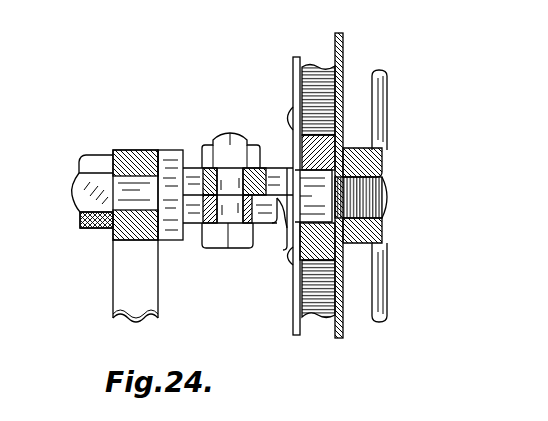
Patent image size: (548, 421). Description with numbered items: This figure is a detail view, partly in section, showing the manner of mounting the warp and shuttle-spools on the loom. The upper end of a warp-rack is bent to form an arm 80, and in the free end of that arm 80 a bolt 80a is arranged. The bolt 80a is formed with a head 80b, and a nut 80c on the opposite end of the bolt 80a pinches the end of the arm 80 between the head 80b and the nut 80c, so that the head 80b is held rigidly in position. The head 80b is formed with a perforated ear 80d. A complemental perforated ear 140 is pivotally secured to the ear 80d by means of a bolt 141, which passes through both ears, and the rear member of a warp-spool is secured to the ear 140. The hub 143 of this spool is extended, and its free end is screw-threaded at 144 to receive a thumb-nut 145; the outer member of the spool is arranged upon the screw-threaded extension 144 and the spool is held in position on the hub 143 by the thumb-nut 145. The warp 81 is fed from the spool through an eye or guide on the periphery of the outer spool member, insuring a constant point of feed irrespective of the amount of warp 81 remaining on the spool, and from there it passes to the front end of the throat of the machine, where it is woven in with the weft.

The arm 80 is at (118, 272).
The bolt 80a is at (130, 187).
The head 80b is at (173, 170).
The nut 80c is at (93, 168).
The perforated ear 80d is at (198, 218).
The warp 81 is at (318, 58).
The complemental perforated ear 140 is at (278, 166).
The bolt 141 is at (232, 210).
The hub 143 is at (372, 258).
The screw-threaded extension 144 is at (313, 198).
The thumb-nut 145 is at (359, 150).